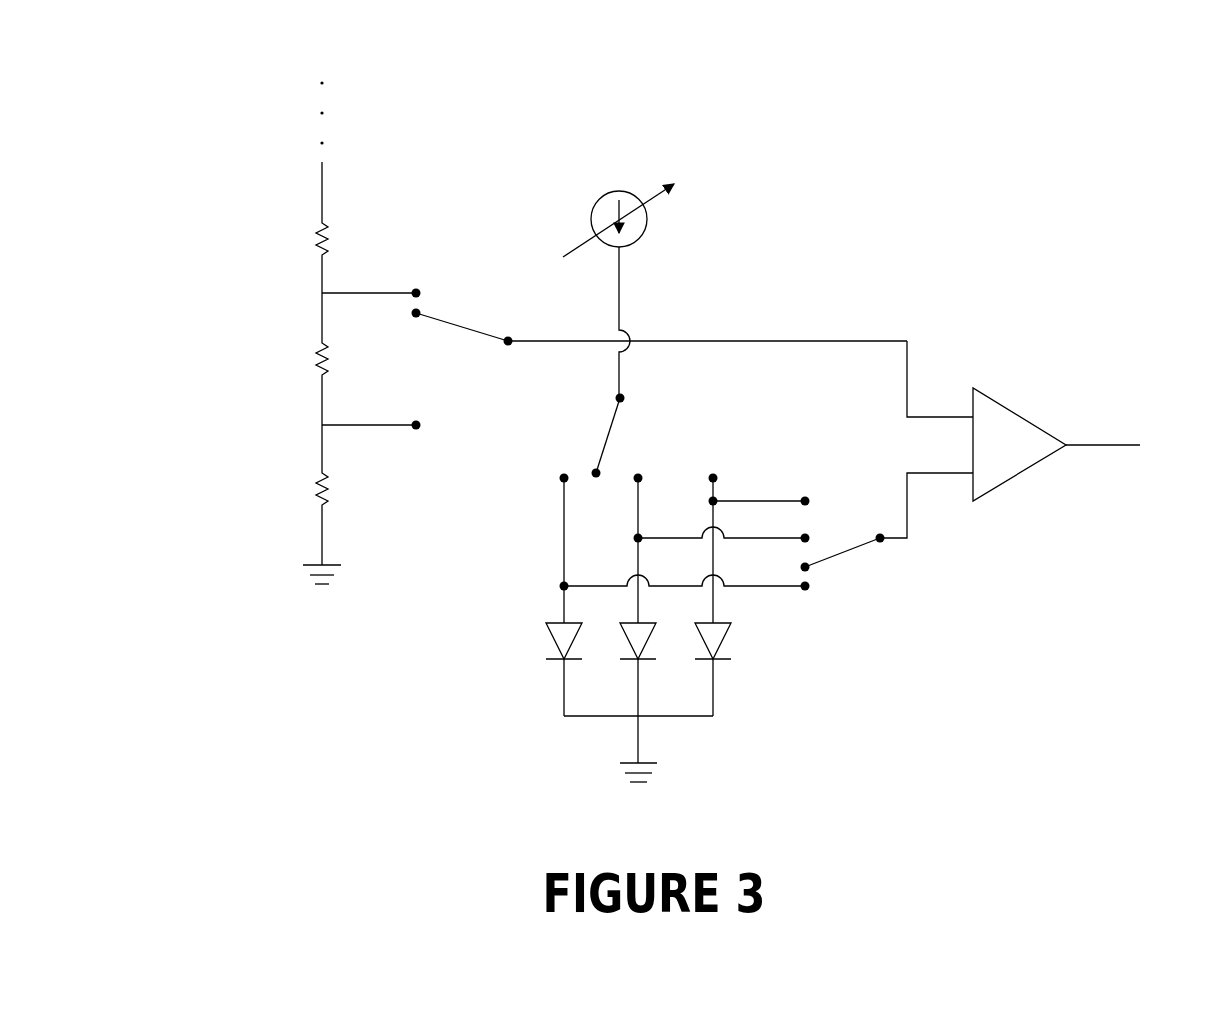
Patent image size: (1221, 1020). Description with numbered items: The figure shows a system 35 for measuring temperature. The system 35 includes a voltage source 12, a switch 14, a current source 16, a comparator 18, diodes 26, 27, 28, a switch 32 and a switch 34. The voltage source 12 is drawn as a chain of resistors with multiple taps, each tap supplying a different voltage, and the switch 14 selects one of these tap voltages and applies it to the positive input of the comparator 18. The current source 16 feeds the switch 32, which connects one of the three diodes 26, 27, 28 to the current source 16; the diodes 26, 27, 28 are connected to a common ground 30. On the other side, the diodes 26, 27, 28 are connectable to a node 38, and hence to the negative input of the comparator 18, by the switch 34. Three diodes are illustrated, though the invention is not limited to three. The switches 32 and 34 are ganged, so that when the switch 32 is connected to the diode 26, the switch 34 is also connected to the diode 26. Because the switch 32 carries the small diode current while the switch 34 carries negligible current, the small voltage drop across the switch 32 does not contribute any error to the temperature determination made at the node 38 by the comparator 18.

The system 35 is at (185, 85).
The voltage source 12 is at (283, 257).
The switch 14 is at (467, 296).
The current source 16 is at (628, 157).
The switch 32 is at (600, 425).
The switch 34 is at (852, 530).
The comparator 18 is at (1028, 486).
The node 38 is at (889, 550).
The diode 26 is at (528, 619).
The diode 27 is at (631, 595).
The diode 28 is at (649, 595).
The ground 30 is at (668, 777).